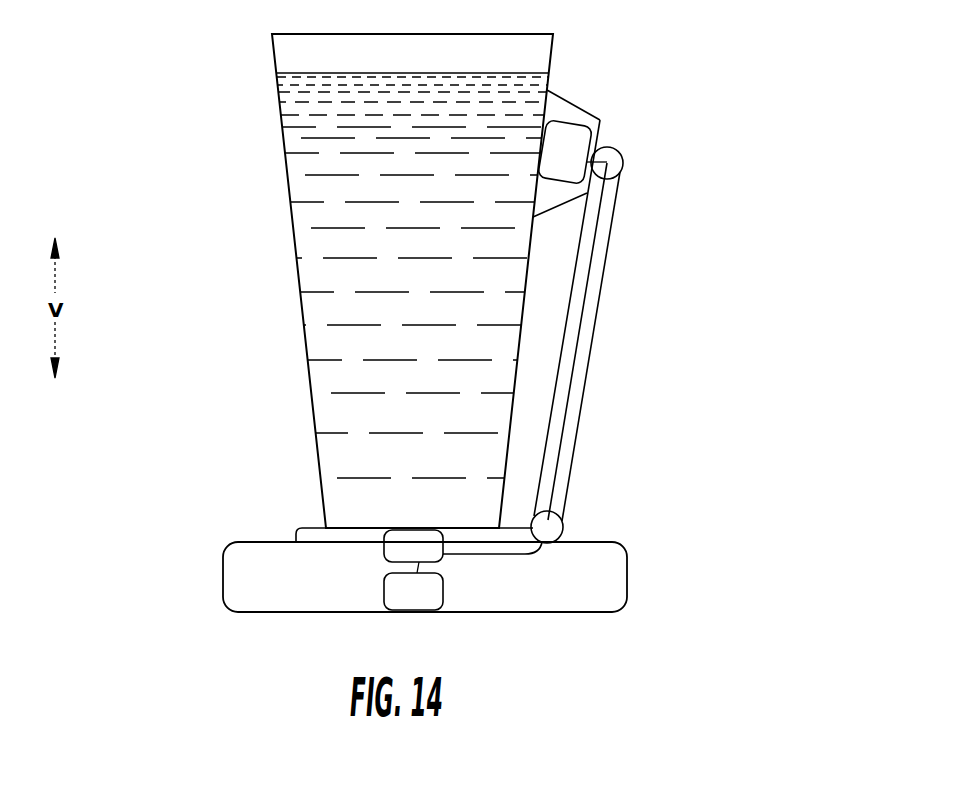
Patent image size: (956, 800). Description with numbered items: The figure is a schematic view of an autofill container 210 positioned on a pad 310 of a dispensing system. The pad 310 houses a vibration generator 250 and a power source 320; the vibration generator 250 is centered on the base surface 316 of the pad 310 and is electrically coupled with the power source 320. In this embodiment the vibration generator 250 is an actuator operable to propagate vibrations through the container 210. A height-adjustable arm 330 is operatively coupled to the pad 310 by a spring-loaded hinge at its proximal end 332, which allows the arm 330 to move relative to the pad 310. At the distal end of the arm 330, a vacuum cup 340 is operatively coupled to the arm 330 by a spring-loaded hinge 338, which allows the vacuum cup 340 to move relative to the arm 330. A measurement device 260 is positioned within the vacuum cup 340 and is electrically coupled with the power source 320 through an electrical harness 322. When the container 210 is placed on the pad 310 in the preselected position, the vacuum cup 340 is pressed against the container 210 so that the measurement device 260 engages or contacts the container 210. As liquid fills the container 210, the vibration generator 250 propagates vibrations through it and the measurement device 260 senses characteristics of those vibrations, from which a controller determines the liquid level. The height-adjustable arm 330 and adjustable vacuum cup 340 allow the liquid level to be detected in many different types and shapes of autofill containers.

The container 210 is at (295, 239).
The vibration generator 250 is at (384, 546).
The measurement device 260 is at (563, 134).
The pad 310 is at (190, 558).
The base surface 316 is at (312, 526).
The power source 320 is at (443, 592).
The electrical harness 322 is at (571, 388).
The height-adjustable arm 330 is at (595, 308).
The proximal end 332 is at (559, 514).
The spring-loaded hinge 338 is at (618, 150).
The vacuum cup 340 is at (597, 120).